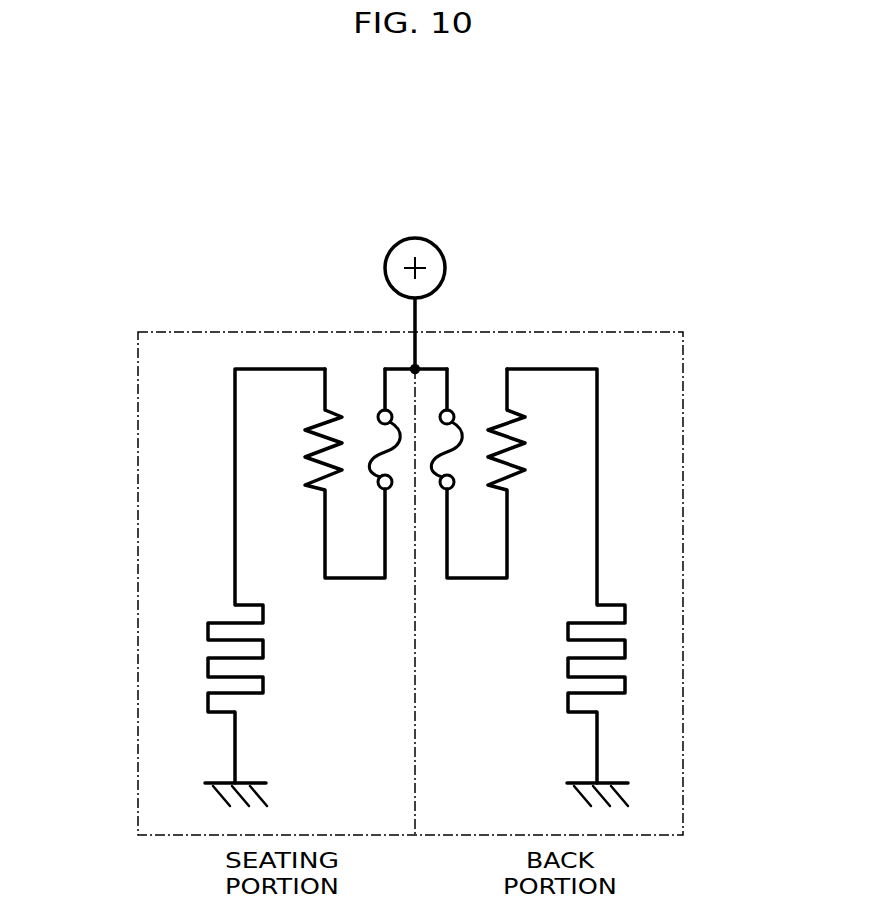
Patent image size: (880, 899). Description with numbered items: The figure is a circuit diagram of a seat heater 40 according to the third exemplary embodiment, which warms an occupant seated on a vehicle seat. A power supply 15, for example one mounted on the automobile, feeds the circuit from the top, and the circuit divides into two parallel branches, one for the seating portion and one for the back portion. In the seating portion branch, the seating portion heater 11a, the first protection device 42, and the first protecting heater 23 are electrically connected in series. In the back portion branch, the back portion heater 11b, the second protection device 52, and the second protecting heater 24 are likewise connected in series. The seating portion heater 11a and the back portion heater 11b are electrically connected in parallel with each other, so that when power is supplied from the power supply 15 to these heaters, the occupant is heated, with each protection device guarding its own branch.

The power supply 15 is at (424, 241).
The first protecting heater 23 is at (318, 424).
The second protecting heater 24 is at (520, 412).
The first protection device 42 is at (380, 410).
The second protection device 52 is at (453, 412).
The seat heater 40 is at (642, 220).
The seating portion heater 11a is at (205, 652).
The back portion heater 11b is at (637, 652).